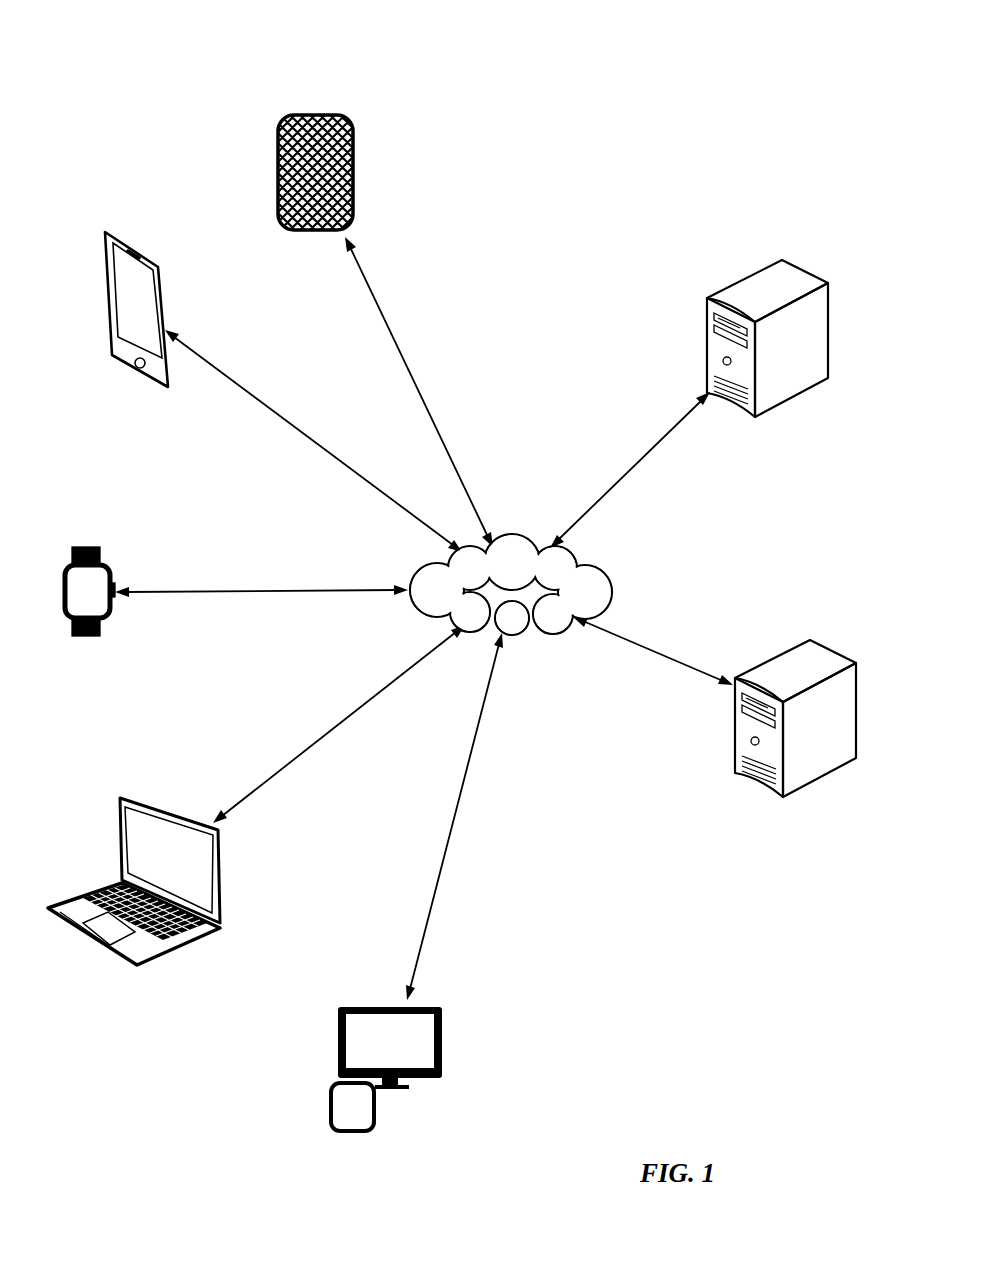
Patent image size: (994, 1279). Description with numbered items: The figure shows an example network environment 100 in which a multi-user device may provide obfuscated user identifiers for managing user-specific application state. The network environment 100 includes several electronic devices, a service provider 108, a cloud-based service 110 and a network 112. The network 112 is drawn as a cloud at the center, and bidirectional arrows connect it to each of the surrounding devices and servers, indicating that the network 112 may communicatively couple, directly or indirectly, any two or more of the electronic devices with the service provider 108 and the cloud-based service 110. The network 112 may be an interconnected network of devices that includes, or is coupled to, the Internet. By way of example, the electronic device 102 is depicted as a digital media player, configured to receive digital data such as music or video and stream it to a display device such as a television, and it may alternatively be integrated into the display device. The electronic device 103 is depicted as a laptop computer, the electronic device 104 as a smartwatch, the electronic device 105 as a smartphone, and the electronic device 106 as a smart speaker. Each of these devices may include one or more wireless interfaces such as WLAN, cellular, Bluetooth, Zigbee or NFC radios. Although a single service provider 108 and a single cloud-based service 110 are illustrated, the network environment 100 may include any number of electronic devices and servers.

The network environment 100 is at (78, 80).
The electronic device 102 is at (353, 1134).
The electronic device 103 is at (135, 967).
The electronic device 104 is at (76, 637).
The electronic device 105 is at (130, 370).
The electronic device 106 is at (288, 116).
The service provider 108 is at (797, 262).
The cloud-based service 110 is at (827, 642).
The network 112 is at (534, 547).